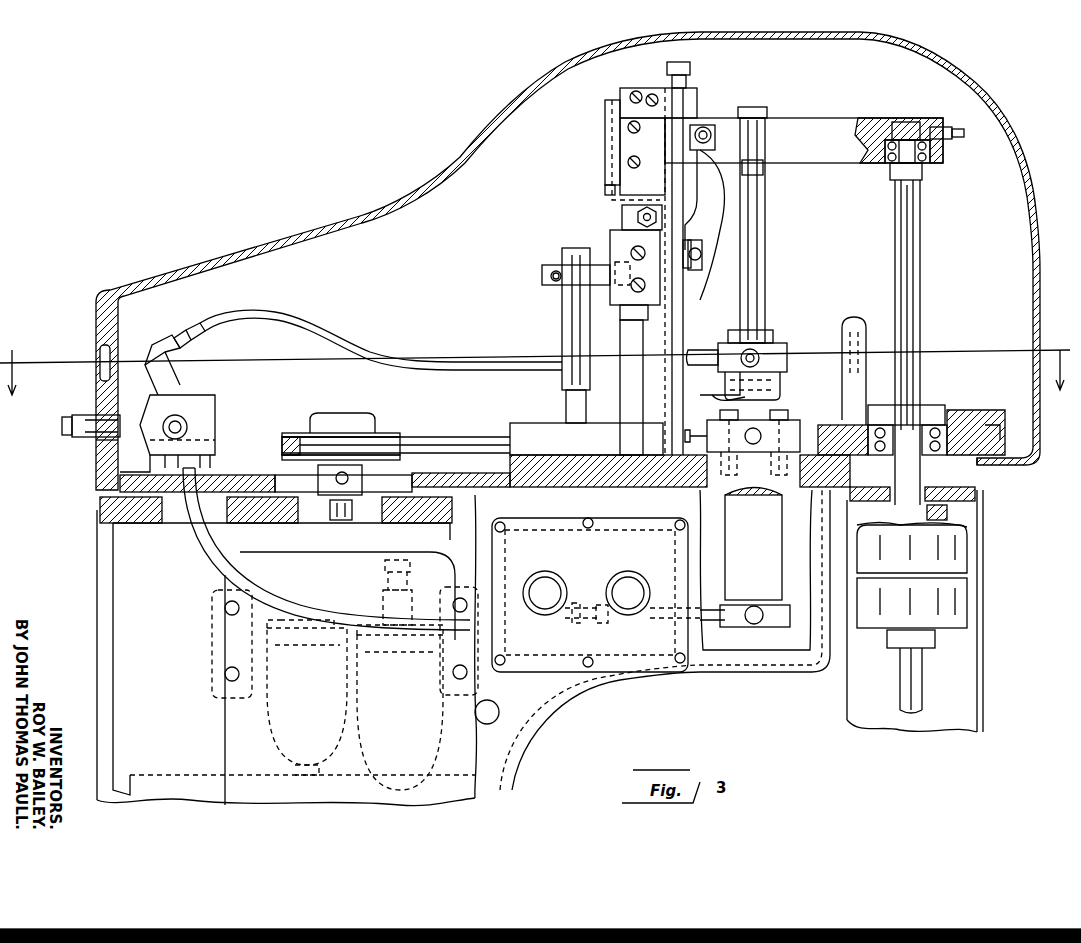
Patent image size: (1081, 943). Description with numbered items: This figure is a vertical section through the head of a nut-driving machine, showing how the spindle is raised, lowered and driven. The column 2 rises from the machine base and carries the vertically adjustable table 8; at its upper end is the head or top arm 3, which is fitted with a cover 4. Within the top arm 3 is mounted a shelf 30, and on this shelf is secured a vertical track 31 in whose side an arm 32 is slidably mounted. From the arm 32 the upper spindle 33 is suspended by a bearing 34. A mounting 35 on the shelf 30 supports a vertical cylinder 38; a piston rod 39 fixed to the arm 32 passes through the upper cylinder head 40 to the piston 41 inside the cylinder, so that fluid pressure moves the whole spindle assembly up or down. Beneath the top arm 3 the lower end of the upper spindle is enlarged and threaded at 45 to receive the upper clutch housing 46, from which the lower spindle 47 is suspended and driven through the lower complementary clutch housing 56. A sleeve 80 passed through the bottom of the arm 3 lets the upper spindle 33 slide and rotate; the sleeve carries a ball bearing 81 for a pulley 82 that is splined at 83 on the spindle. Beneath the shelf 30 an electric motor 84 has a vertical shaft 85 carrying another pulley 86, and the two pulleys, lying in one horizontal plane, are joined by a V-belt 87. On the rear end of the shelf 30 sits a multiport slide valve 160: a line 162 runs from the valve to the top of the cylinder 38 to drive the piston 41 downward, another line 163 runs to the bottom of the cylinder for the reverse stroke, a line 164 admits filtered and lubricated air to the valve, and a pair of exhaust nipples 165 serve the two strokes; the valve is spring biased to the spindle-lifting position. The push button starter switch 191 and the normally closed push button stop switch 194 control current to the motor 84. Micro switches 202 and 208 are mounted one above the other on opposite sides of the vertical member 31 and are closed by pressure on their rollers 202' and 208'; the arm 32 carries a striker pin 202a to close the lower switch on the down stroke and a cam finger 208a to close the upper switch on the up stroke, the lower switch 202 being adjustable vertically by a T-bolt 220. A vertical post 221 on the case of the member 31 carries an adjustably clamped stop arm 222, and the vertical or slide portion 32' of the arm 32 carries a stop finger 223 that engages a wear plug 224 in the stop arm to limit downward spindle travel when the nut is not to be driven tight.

The column 2 is at (512, 752).
The head or top arm 3 is at (98, 456).
The cover 4 is at (96, 318).
The table 8 is at (535, 362).
The shelf 30 is at (522, 462).
The vertical track 31 is at (640, 340).
The arm 32 is at (814, 125).
The vertical or slide portion of the arm 32' is at (631, 128).
The upper spindle 33 is at (924, 208).
The bearing 34 is at (898, 165).
The mounting 35 is at (798, 420).
The vertical cylinder 38 is at (740, 587).
The piston rod 39 is at (768, 291).
The upper cylinder head 40 is at (776, 344).
The piston 41 is at (782, 390).
The enlarged threaded end of upper spindle 45 is at (950, 512).
The upper clutch housing 46 is at (960, 556).
The lower spindle 47 is at (910, 684).
The lower complementary clutch housing 56 is at (960, 608).
The sleeve 80 is at (992, 464).
The ball bearing 81 is at (947, 420).
The pulley 82 is at (975, 425).
The spline 83 is at (920, 374).
The electric motor 84 is at (228, 738).
The vertical shaft 85 is at (352, 508).
The pulley 86 is at (370, 433).
The V-belt 87 is at (430, 440).
The multiport slide valve 160 is at (118, 472).
The line 162 is at (208, 320).
The line 163 is at (204, 560).
The line 164 is at (196, 430).
The exhaust nipples 165 is at (70, 418).
The push button starter switch 191 is at (548, 590).
The push button stop switch 194 is at (626, 590).
The micro switch 202 is at (604, 271).
The roller 202' is at (708, 273).
The striker pin 202a is at (700, 128).
The micro switch 208 is at (590, 142).
The roller 208' is at (714, 150).
The cam finger 208a is at (708, 128).
The T-bolt 220 is at (636, 216).
The vertical post 221 is at (566, 340).
The stop arm 222 is at (545, 283).
The stop finger 223 is at (608, 190).
The wear plug 224 is at (615, 266).